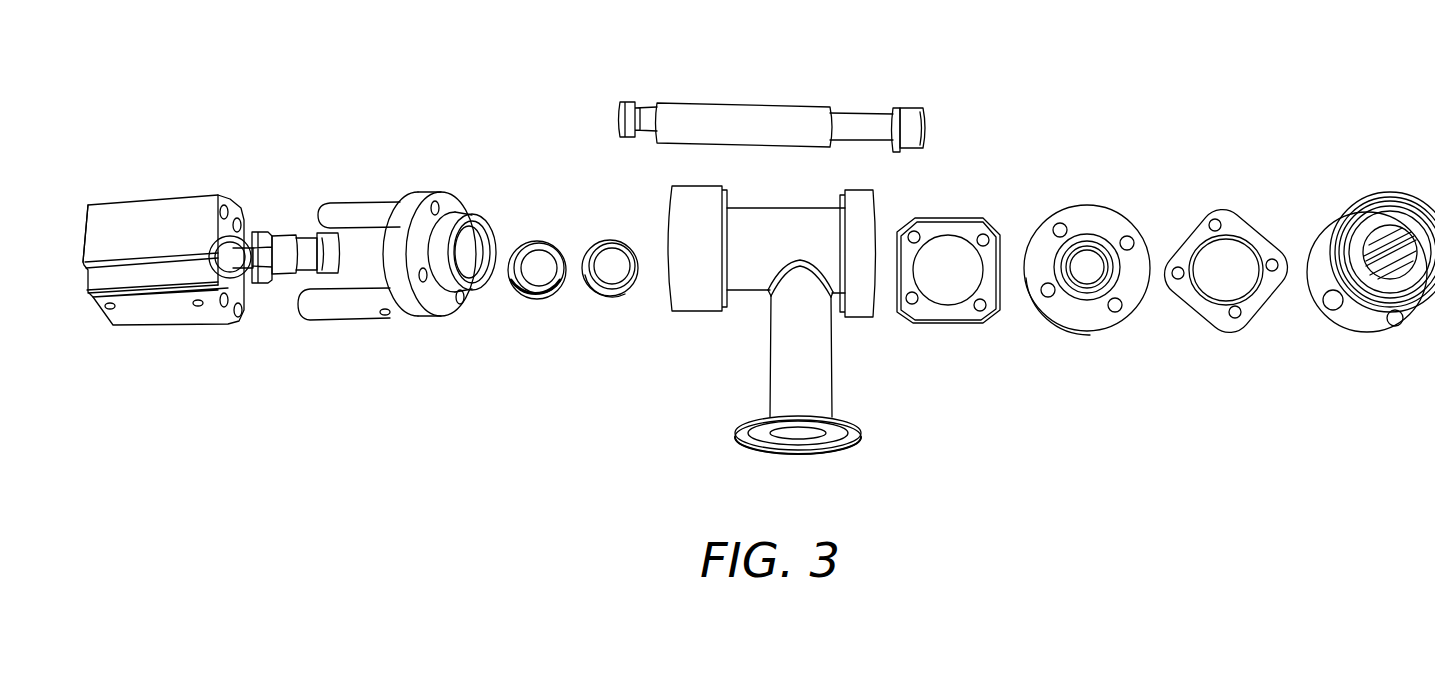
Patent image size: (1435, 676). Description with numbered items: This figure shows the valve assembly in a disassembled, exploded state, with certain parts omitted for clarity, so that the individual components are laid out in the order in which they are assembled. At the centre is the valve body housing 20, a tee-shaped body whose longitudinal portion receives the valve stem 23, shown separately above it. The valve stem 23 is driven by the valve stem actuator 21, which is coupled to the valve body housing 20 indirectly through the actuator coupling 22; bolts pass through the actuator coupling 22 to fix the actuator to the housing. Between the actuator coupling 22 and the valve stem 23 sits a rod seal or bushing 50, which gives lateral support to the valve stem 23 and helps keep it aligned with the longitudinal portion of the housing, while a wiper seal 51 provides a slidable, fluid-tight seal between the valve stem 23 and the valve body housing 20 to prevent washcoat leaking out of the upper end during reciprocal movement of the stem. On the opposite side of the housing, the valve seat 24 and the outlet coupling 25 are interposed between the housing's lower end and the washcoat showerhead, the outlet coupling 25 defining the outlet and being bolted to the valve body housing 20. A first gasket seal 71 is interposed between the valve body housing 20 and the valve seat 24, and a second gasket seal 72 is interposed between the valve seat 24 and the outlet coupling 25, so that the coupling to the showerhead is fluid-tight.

The valve body housing 20 is at (710, 323).
The valve stem actuator 21 is at (160, 194).
The actuator coupling 22 is at (380, 192).
The valve stem 23 is at (765, 93).
The valve seat 24 is at (1063, 200).
The outlet coupling 25 is at (1328, 200).
The rod seal or bushing 50 is at (525, 308).
The wiper seal 51 is at (603, 308).
The first gasket seal 71 is at (950, 215).
The second gasket seal 72 is at (1185, 200).